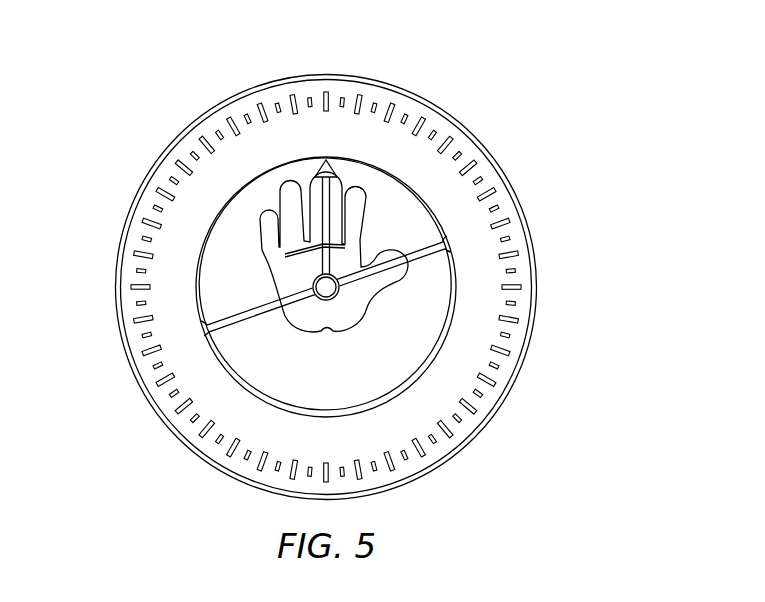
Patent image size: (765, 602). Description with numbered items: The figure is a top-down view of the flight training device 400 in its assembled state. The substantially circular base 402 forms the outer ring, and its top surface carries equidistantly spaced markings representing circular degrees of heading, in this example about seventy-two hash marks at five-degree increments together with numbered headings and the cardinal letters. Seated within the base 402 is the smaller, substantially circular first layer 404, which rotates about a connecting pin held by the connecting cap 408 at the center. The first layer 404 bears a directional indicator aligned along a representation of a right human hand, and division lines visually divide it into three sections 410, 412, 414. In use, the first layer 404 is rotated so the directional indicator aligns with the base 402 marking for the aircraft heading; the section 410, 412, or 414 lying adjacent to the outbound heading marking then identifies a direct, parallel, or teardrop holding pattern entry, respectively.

The flight training device 400 is at (119, 92).
The base 402 is at (537, 315).
The first layer 404 is at (458, 273).
The connecting cap 408 is at (330, 288).
The section 410 is at (395, 360).
The section 412 is at (217, 251).
The section 414 is at (372, 178).